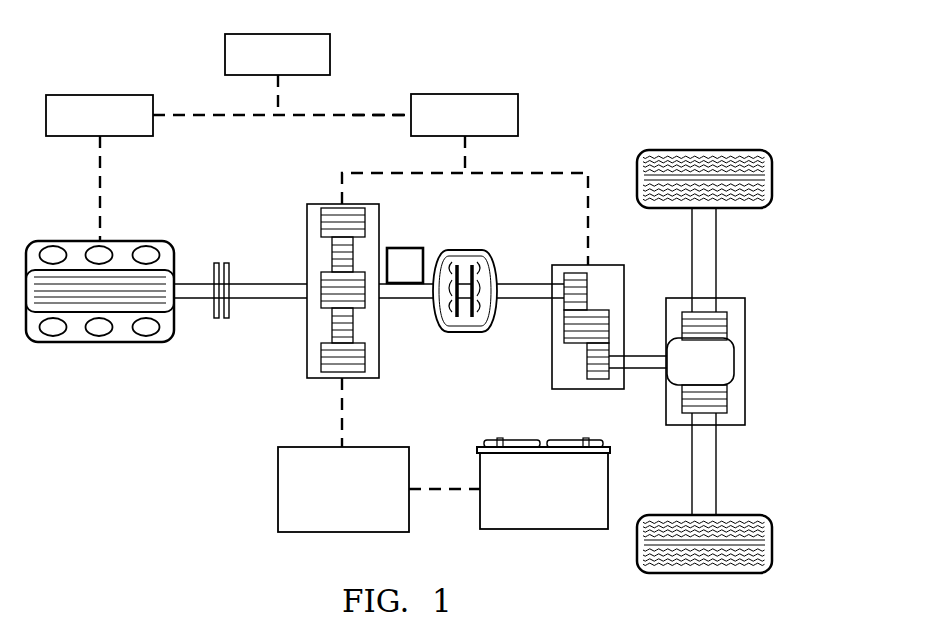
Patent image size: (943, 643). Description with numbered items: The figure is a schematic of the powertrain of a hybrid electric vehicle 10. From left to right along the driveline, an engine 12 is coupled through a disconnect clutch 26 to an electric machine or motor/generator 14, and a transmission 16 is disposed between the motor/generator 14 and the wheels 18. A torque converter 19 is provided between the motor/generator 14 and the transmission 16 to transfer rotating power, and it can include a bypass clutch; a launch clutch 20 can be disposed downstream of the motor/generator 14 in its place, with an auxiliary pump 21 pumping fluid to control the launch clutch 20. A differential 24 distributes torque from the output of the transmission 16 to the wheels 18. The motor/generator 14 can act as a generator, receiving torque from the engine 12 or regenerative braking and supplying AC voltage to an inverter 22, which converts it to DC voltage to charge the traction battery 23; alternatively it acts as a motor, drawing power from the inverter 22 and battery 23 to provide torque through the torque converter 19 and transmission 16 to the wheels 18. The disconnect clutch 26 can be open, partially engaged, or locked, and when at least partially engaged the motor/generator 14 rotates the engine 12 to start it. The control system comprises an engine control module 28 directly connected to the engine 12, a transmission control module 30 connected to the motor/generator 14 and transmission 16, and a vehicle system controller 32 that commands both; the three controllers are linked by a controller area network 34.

The vehicle 10 is at (123, 447).
The engine 12 is at (105, 342).
The electric machine or motor/generator (M/G) 14 is at (307, 352).
The transmission 16 is at (598, 275).
The wheels 18 is at (709, 150).
The torque converter 19 is at (470, 333).
The launch clutch 20 is at (458, 303).
The auxiliary pump 21 is at (405, 248).
The inverter 22 is at (278, 490).
The traction battery 23 is at (560, 529).
The differential 24 is at (735, 356).
The disconnect clutch 26 is at (216, 318).
The engine control module (ECM) 28 is at (83, 95).
The transmission control module (TCM) 30 is at (470, 94).
The vehicle system controller (VSC) 32 is at (225, 58).
The controller area network (CAN) 34 is at (352, 115).